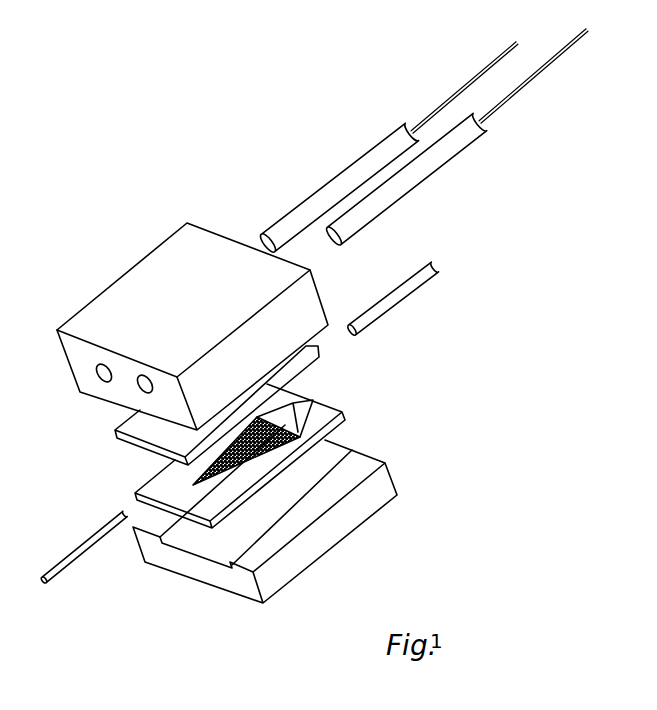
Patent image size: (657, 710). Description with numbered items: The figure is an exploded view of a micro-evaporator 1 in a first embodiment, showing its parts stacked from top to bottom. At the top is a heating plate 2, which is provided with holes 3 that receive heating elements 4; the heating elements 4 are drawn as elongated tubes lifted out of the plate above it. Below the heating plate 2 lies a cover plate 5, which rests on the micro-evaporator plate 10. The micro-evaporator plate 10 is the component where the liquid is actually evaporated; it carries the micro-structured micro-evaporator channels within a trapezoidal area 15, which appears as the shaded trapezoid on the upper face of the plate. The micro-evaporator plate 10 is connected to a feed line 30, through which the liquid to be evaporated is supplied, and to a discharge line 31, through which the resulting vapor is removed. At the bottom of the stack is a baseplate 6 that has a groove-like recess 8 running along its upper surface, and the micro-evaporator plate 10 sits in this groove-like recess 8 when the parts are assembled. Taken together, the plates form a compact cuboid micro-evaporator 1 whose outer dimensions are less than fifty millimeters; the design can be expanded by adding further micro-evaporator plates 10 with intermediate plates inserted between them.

The micro-evaporator 1 is at (527, 305).
The heating plate 2 is at (133, 300).
The holes 3 is at (147, 393).
The heating elements 4 is at (378, 158).
The cover plate 5 is at (113, 428).
The baseplate 6 is at (247, 587).
The groove-like recess 8 is at (205, 543).
The micro-evaporator plate 10 is at (315, 415).
The trapezoidal area 15 is at (297, 440).
The feed line 30 is at (62, 577).
The discharge line 31 is at (395, 300).